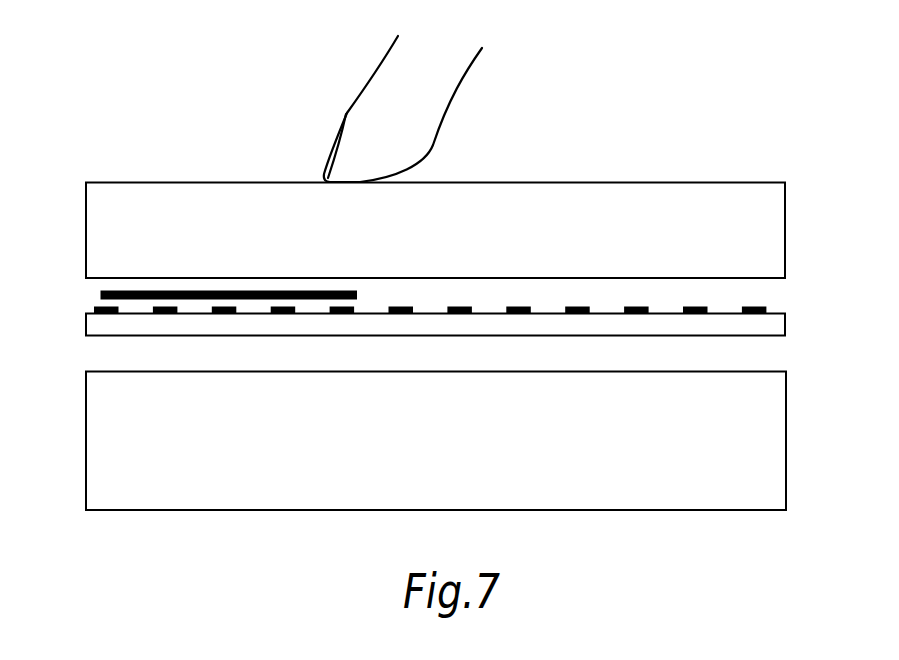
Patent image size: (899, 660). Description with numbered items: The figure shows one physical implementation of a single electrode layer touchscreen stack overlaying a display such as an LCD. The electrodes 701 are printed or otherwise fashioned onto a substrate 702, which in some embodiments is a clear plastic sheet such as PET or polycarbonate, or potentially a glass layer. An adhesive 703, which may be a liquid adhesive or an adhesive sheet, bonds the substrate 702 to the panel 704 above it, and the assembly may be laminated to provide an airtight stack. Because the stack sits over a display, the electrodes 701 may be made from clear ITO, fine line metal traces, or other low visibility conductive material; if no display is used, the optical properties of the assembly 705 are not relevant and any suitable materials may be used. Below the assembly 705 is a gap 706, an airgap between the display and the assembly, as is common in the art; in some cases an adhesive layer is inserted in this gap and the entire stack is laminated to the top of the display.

The electrodes 701 is at (763, 313).
The substrate 702 is at (110, 333).
The adhesive 703 is at (758, 289).
The panel 704 is at (99, 220).
The assembly 705 is at (438, 322).
The gap 706 is at (775, 358).